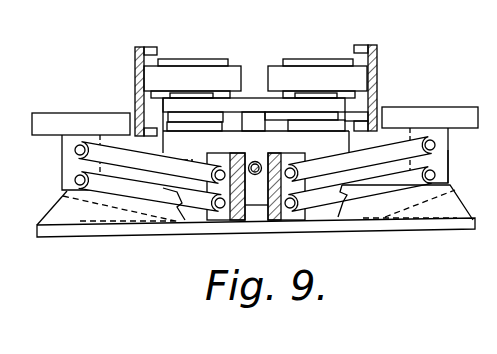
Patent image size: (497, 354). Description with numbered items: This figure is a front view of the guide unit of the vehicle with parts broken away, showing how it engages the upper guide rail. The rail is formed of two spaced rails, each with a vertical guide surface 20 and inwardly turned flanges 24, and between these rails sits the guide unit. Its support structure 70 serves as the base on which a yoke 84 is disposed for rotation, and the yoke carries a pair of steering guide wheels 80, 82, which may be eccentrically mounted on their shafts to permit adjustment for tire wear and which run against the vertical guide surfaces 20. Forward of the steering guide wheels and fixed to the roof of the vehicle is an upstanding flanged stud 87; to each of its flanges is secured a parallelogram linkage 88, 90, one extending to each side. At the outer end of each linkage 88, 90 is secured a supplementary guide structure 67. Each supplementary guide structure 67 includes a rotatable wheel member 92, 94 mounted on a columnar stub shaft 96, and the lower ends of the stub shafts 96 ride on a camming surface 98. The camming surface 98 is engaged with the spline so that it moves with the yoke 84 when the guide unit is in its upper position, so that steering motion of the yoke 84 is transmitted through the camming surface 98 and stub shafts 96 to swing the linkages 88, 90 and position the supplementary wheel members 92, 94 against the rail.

The vertical guide surface 20 is at (135, 66).
The inwardly turned flange 24 is at (151, 46).
The supplementary guide structure 67 is at (458, 159).
The support structure 70 is at (323, 140).
The steering guide wheel 80 is at (195, 73).
The steering guide wheel 82 is at (318, 70).
The yoke 84 is at (250, 98).
The upstanding flanged stud 87 is at (243, 217).
The parallelogram linkage 88 is at (163, 188).
The parallelogram linkage 90 is at (359, 159).
The rotatable wheel member 92 is at (48, 118).
The rotatable wheel member 94 is at (458, 110).
The columnar stub shaft 96 is at (111, 210).
The camming surface 98 is at (457, 197).